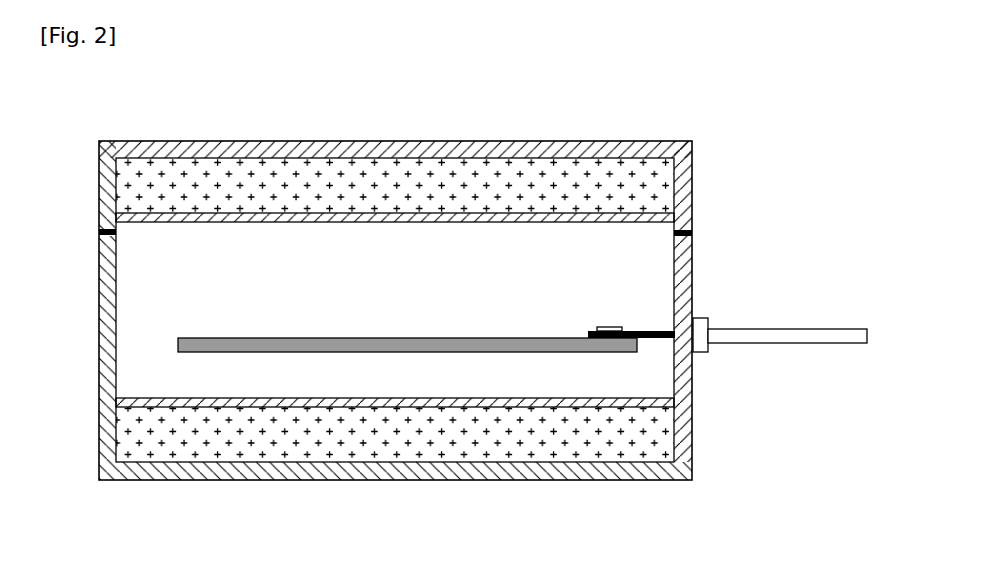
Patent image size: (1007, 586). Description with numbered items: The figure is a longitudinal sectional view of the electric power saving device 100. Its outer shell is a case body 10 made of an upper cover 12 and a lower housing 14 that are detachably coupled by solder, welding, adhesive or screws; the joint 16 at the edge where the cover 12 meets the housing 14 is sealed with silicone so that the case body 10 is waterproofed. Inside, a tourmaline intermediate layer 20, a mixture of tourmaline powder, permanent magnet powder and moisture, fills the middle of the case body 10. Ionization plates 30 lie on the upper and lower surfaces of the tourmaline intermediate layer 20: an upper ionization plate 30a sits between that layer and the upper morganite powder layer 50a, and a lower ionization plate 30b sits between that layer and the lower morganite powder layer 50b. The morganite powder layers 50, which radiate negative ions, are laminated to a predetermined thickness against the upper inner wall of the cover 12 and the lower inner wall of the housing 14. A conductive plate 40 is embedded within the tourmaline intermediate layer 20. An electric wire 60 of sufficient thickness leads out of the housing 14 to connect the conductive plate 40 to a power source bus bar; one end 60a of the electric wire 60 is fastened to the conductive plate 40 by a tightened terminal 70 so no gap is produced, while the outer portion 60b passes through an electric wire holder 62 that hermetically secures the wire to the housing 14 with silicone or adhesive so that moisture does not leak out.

The electric power saving device 100 is at (459, 312).
The case body 10 is at (441, 310).
The upper cover 12 is at (684, 199).
The lower housing 14 is at (424, 358).
The joint 16 is at (99, 233).
The tourmaline intermediate layer 20 is at (200, 262).
The ionization plates 30 is at (395, 234).
The upper ionization plate 30a is at (313, 213).
The lower ionization plate 30b is at (410, 400).
The conductive plate 40 is at (340, 352).
The morganite powder layers 50 is at (395, 360).
The upper morganite powder layer 50a is at (152, 197).
The lower morganite powder layer 50b is at (222, 442).
The electric wire 60 is at (727, 440).
The one end of the electric wire 60a is at (660, 340).
The external terminal 60b is at (753, 343).
The electric wire holder 62 is at (699, 353).
The terminal 70 is at (609, 327).